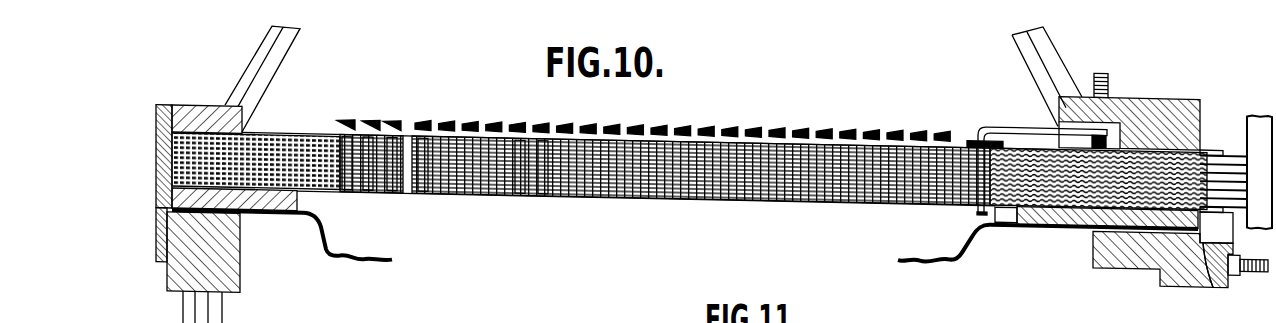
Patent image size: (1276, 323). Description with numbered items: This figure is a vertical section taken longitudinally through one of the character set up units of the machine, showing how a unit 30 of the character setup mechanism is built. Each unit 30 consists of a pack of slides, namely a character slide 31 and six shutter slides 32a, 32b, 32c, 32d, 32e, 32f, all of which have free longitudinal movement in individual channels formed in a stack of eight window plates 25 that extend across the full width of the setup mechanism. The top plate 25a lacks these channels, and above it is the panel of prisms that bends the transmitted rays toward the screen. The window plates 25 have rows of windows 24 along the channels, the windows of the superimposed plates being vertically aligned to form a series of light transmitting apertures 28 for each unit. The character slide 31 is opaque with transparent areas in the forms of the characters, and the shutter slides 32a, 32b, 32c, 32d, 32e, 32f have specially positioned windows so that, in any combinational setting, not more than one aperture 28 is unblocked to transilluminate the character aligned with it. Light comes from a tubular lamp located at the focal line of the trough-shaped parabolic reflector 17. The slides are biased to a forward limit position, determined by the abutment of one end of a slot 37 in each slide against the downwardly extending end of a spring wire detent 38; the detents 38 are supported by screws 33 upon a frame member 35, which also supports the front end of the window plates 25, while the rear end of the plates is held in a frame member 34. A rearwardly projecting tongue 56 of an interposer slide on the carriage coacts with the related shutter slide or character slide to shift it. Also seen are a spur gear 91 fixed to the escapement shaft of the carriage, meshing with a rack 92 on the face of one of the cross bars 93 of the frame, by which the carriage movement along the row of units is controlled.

The trough-shaped parabolic reflector 17 is at (322, 248).
The windows 24 is at (472, 136).
The window plates 25 is at (317, 192).
The top plate 25a is at (283, 132).
The light transmitting apertures 28 is at (707, 203).
The unit 30 is at (787, 211).
The character slide 31 is at (945, 147).
The shutter slide 32a is at (347, 189).
The shutter slide 32b is at (368, 190).
The shutter slide 32c is at (392, 190).
The shutter slide 32d is at (423, 193).
The shutter slide 32e is at (520, 194).
The shutter slide 32f is at (543, 194).
The screws 33 is at (1108, 74).
The frame member 34 is at (240, 196).
The frame member 35 is at (1055, 219).
The slot 37 is at (993, 211).
The spring wire detent 38 is at (996, 128).
The tongue 56 is at (1236, 212).
The spur gear 91 is at (1258, 275).
The rack 92 is at (1238, 279).
The cross bar 93 is at (1193, 286).